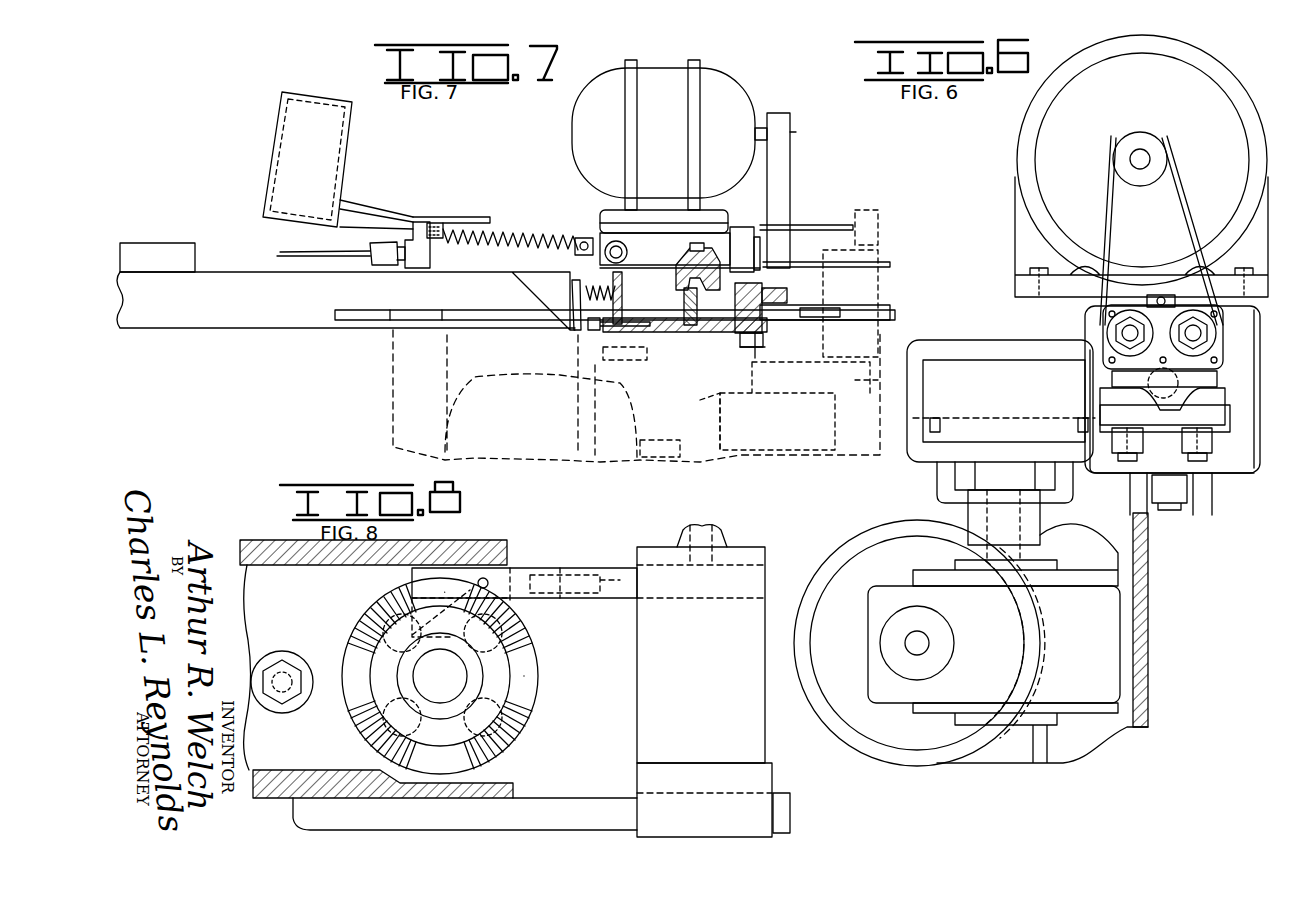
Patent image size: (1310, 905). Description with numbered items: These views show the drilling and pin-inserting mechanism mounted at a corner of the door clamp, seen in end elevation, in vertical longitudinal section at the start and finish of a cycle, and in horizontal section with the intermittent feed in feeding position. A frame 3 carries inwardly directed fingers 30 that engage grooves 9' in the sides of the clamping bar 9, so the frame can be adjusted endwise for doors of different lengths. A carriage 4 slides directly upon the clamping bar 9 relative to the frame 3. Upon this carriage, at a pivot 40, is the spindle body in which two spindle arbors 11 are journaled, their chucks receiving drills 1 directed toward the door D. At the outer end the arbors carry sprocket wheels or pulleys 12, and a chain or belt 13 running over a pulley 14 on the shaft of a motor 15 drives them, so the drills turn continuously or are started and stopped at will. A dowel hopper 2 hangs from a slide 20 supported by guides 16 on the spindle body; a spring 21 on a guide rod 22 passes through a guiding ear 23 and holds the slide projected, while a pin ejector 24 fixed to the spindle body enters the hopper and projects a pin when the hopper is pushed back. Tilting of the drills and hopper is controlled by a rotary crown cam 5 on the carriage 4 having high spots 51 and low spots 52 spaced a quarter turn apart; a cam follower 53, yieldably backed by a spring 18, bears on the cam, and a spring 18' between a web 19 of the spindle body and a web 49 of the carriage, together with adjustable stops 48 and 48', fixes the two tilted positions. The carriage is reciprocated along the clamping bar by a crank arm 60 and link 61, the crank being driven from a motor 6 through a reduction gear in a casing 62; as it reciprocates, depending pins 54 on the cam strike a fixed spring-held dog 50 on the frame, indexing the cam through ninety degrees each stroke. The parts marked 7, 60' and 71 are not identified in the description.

In FIG. 7, the drills 1 is at (290, 254).
In FIG. 7, the dowel hopper 2 is at (282, 135).
In FIG. 6, the frame 3 is at (1150, 570).
In FIG. 8, the frame 3 is at (704, 681).
In FIG. 6, the carriage 4 is at (1222, 475).
In FIG. 8, the carriage 4 is at (298, 790).
In FIG. 6, the rotary crown cam 5 is at (1222, 415).
In FIG. 8, the rotary crown cam 5 is at (352, 636).
In FIG. 7, the motor 6 is at (448, 414).
In FIG. 6, the motor 6 is at (868, 552).
In FIG. 7, the switch 7 is at (866, 210).
In FIG. 7, the clamping bar 9 is at (346, 317).
In FIG. 6, the clamping bar 9 is at (1000, 384).
In FIG. 7, the grooves 9' is at (615, 299).
In FIG. 6, the grooves 9' is at (1009, 409).
In FIG. 6, the spindle arbors 11 is at (1138, 333).
In FIG. 6, the sprocket wheels or pulleys 12 is at (1115, 320).
In FIG. 7, the chain or belt 13 is at (790, 184).
In FIG. 6, the chain or belt 13 is at (1182, 190).
In FIG. 7, the sprocket wheel or pulley 14 is at (790, 150).
In FIG. 6, the sprocket wheel or pulley 14 is at (1125, 172).
In FIG. 7, the motor 15 is at (663, 146).
In FIG. 6, the motor 15 is at (1040, 138).
In FIG. 7, the guides 16 is at (582, 238).
In FIG. 7, the spring 18 is at (745, 232).
In FIG. 7, the spring 18' is at (580, 284).
In FIG. 7, the web 19 is at (572, 326).
In FIG. 7, the slide 20 is at (480, 216).
In FIG. 7, the spring 21 is at (536, 236).
In FIG. 7, the guide rod 22 is at (470, 258).
In FIG. 7, the guiding ear 23 is at (437, 222).
In FIG. 7, the pin ejector 24 is at (380, 210).
In FIG. 6, the inwardly directed fingers 30 is at (1077, 413).
In FIG. 7, the pivot 40 is at (610, 244).
In FIG. 7, the adjustable stop 48 is at (671, 306).
In FIG. 8, the adjustable stop 48 is at (282, 669).
In FIG. 7, the adjustable stop 48' is at (606, 344).
In FIG. 7, the web 49 is at (622, 286).
In FIG. 7, the dog 50 is at (800, 322).
In FIG. 8, the dog 50 is at (440, 676).
In FIG. 7, the high spots 51 is at (775, 288).
In FIG. 6, the high spots 51 is at (1225, 395).
In FIG. 8, the high spots 51 is at (430, 592).
In FIG. 7, the low spots 52 is at (820, 305).
In FIG. 6, the low spots 52 is at (1200, 440).
In FIG. 8, the low spots 52 is at (527, 683).
In FIG. 7, the cam follower 53 is at (682, 262).
In FIG. 6, the cam follower 53 is at (1100, 380).
In FIG. 7, the depending pins 54 is at (745, 336).
In FIG. 6, the depending pins 54 is at (1182, 455).
In FIG. 8, the depending pins 54 is at (535, 645).
In FIG. 6, the crank arm 60 is at (1039, 525).
In FIG. 7, the housing 60' is at (800, 406).
In FIG. 7, the link 61 is at (660, 360).
In FIG. 6, the link 61 is at (962, 480).
In FIG. 7, the casing 62 is at (712, 410).
In FIG. 6, the casing 62 is at (994, 644).
In FIG. 7, the rod 71 is at (838, 226).
In FIG. 6, the rod 71 is at (1158, 293).
In FIG. 7, the door D is at (168, 248).